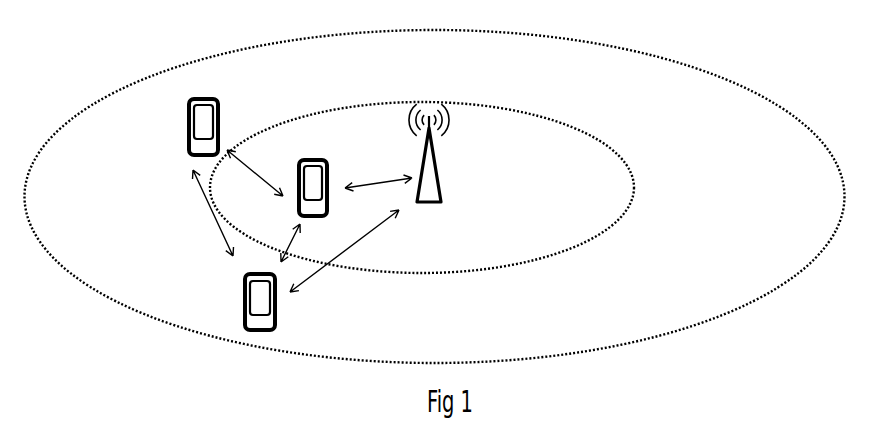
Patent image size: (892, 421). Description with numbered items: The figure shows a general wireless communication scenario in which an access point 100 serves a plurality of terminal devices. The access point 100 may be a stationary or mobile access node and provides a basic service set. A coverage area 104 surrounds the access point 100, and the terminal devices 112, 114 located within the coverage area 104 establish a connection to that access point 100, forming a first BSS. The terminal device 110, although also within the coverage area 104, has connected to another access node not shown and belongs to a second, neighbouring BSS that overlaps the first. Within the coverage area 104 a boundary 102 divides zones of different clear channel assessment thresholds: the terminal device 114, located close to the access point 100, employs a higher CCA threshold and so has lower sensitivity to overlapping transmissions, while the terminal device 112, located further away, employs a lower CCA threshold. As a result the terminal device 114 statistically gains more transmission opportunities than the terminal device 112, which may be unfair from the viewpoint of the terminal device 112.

The access point 100 is at (436, 169).
The boundary 102 is at (624, 160).
The coverage area 104 is at (774, 286).
The terminal device 110 is at (188, 103).
The terminal device 112 is at (244, 279).
The terminal device 114 is at (298, 164).